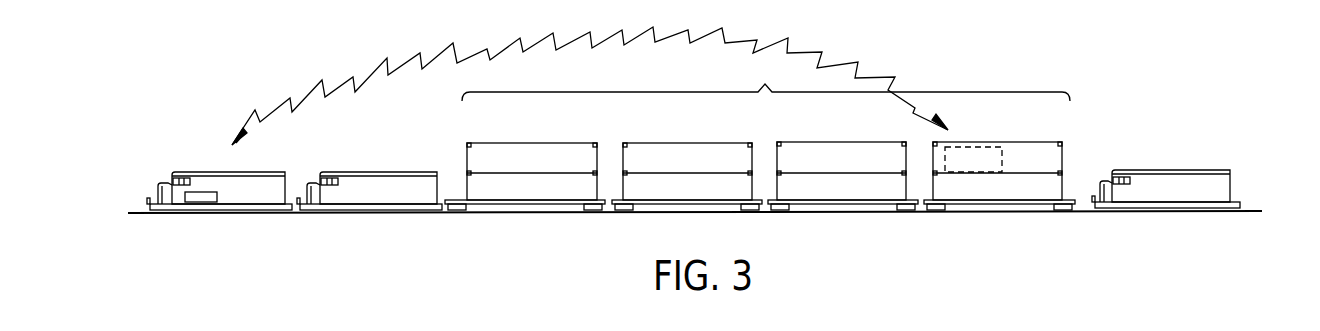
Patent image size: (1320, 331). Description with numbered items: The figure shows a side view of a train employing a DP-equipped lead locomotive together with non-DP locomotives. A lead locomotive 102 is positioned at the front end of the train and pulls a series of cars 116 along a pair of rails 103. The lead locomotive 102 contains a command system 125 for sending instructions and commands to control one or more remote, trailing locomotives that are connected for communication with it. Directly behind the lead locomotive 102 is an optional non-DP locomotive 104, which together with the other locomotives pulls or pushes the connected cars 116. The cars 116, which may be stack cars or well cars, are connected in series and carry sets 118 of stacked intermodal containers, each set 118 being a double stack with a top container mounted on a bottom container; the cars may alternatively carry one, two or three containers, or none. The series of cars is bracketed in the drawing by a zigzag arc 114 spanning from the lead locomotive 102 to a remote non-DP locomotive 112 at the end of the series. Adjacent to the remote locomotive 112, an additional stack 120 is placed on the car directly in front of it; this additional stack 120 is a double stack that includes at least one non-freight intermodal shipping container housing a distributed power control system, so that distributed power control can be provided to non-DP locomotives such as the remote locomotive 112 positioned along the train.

The lead locomotive 102 is at (205, 182).
The rails 103 is at (128, 210).
The non-DP locomotive 104 is at (390, 185).
The remote non-DP locomotive 112 is at (1173, 180).
The group of rail cars 114 is at (766, 79).
The cars 116 is at (485, 208).
The sets of stacked intermodal containers 118 is at (553, 143).
The additional stack 120 is at (990, 143).
The command system 125 is at (203, 203).